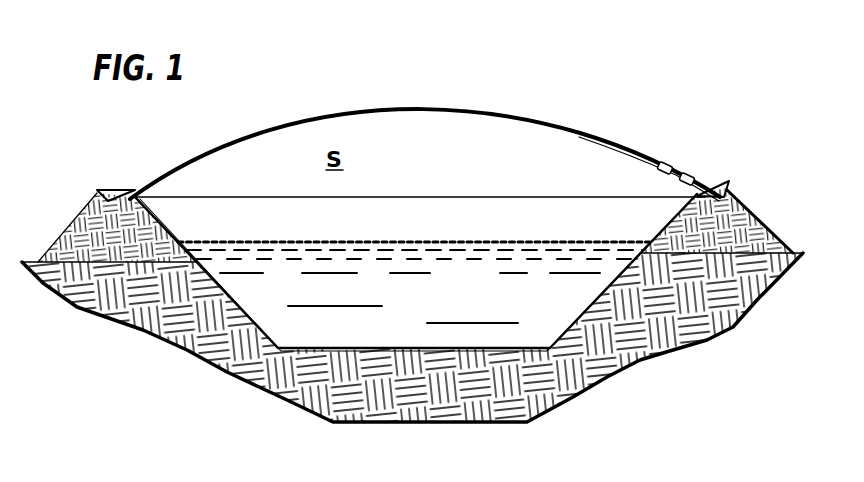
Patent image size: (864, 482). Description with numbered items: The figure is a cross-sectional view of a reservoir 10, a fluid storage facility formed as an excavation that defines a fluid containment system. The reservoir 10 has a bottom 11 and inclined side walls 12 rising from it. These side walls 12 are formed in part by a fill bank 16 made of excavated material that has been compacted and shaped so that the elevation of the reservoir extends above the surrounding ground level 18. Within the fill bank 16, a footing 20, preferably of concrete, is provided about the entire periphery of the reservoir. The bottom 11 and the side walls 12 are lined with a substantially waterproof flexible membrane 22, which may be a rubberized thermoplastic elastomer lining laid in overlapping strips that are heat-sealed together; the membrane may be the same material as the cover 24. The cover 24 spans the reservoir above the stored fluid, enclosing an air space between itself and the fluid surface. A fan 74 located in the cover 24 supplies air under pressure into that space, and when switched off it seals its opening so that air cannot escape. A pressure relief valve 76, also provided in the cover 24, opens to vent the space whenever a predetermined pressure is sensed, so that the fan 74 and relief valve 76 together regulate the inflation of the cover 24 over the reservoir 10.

The reservoir 10 is at (622, 78).
The bottom 11 is at (457, 346).
The side walls 12 is at (600, 297).
The fill bank 16 is at (767, 237).
The ground level 18 is at (803, 256).
The footing 20 is at (703, 218).
The flexible membrane 22 is at (313, 348).
The cover 24 is at (287, 127).
The fan 74 is at (687, 174).
The pressure relief valve 76 is at (663, 162).